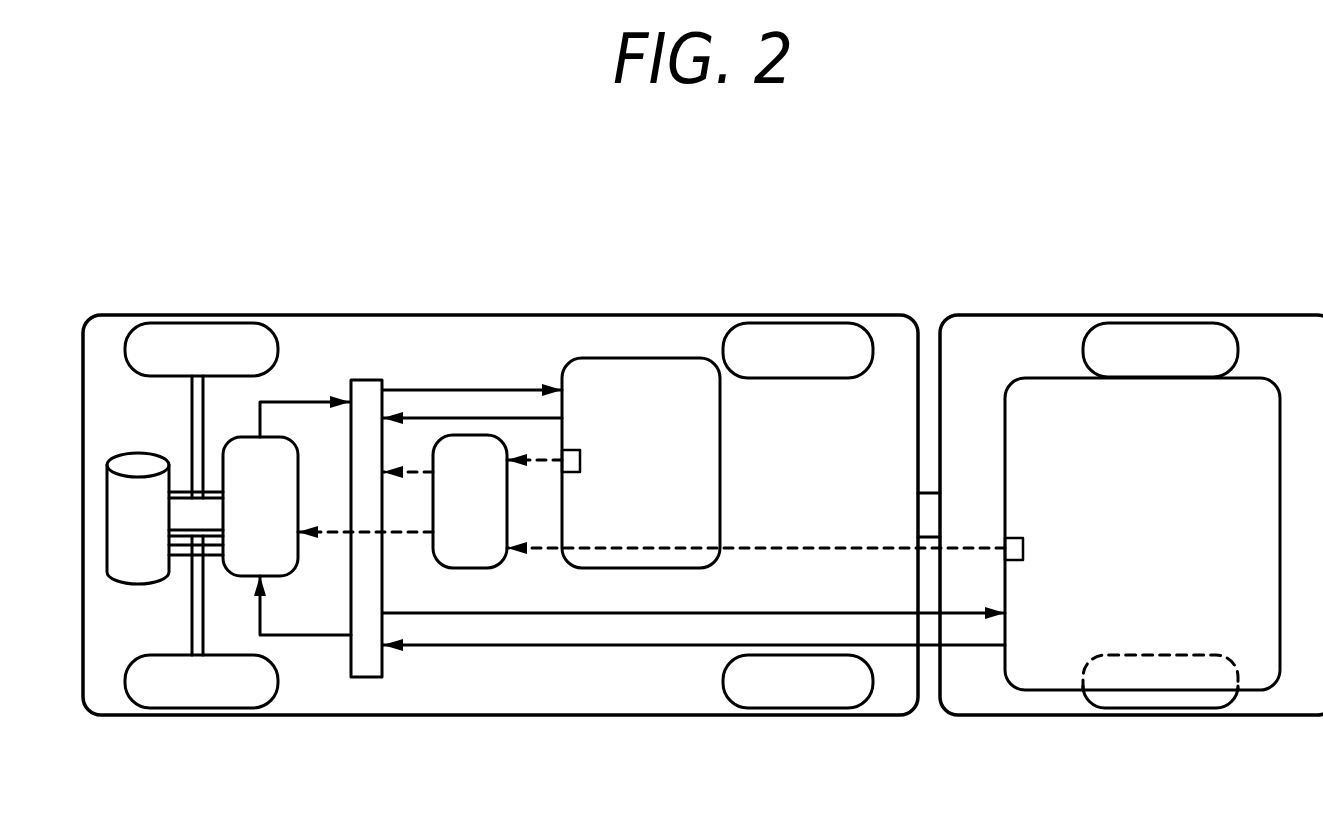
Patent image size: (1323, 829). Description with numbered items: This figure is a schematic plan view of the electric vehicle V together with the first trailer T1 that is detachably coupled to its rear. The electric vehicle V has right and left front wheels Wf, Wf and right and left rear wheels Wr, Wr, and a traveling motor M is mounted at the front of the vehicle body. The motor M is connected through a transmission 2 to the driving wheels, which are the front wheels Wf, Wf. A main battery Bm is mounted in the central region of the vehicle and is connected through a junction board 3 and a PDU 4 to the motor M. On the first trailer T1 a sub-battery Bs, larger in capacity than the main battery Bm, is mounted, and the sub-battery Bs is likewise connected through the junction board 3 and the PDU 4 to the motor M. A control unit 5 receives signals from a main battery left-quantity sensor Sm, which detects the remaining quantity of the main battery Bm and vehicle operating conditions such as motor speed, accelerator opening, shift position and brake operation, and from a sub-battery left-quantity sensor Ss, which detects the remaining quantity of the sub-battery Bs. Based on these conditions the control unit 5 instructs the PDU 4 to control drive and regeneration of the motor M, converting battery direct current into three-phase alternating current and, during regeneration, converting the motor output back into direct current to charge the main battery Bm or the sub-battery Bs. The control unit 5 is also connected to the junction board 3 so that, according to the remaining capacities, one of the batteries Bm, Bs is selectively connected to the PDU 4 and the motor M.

The electric vehicle V is at (467, 312).
The first trailer T1 is at (1055, 310).
The front wheels Wf is at (177, 338).
The rear wheels Wr is at (783, 340).
The traveling motor M is at (138, 518).
The transmission 2 is at (183, 500).
The junction board 3 is at (368, 387).
The PDU (power drive unit) 4 is at (260, 506).
The control unit 5 is at (470, 501).
The main battery Bm is at (641, 463).
The main battery left-quantity sensor Sm is at (580, 462).
The sub-battery Bs is at (1142, 534).
The sub-battery left-quantity sensor Ss is at (1023, 548).